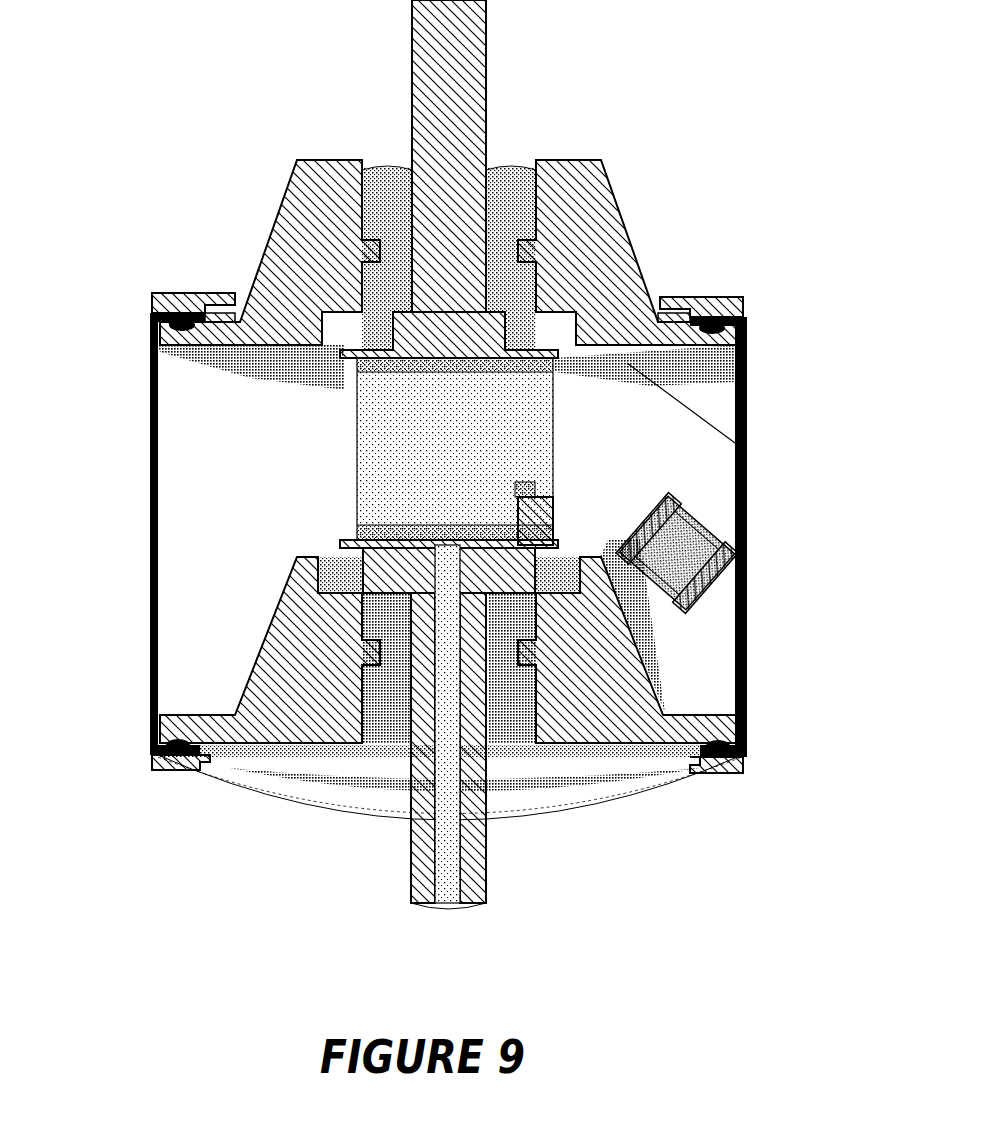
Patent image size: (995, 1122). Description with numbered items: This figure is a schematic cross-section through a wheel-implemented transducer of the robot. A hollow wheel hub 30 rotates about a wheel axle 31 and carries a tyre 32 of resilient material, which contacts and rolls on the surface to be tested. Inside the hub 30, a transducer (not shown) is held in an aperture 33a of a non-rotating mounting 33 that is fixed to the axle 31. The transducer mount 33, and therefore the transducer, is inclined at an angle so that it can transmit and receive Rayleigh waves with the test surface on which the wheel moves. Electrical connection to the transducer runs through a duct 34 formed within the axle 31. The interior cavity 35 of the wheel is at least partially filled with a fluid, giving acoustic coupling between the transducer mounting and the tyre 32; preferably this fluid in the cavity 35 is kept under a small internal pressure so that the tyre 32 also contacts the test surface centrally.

The hollow wheel hub 30 is at (273, 218).
The wheel axle 31 is at (414, 63).
The tyre 32 is at (148, 535).
The mounting 33 is at (695, 457).
The aperture 33a is at (680, 563).
The duct 34 is at (452, 866).
The interior cavity 35 is at (265, 478).